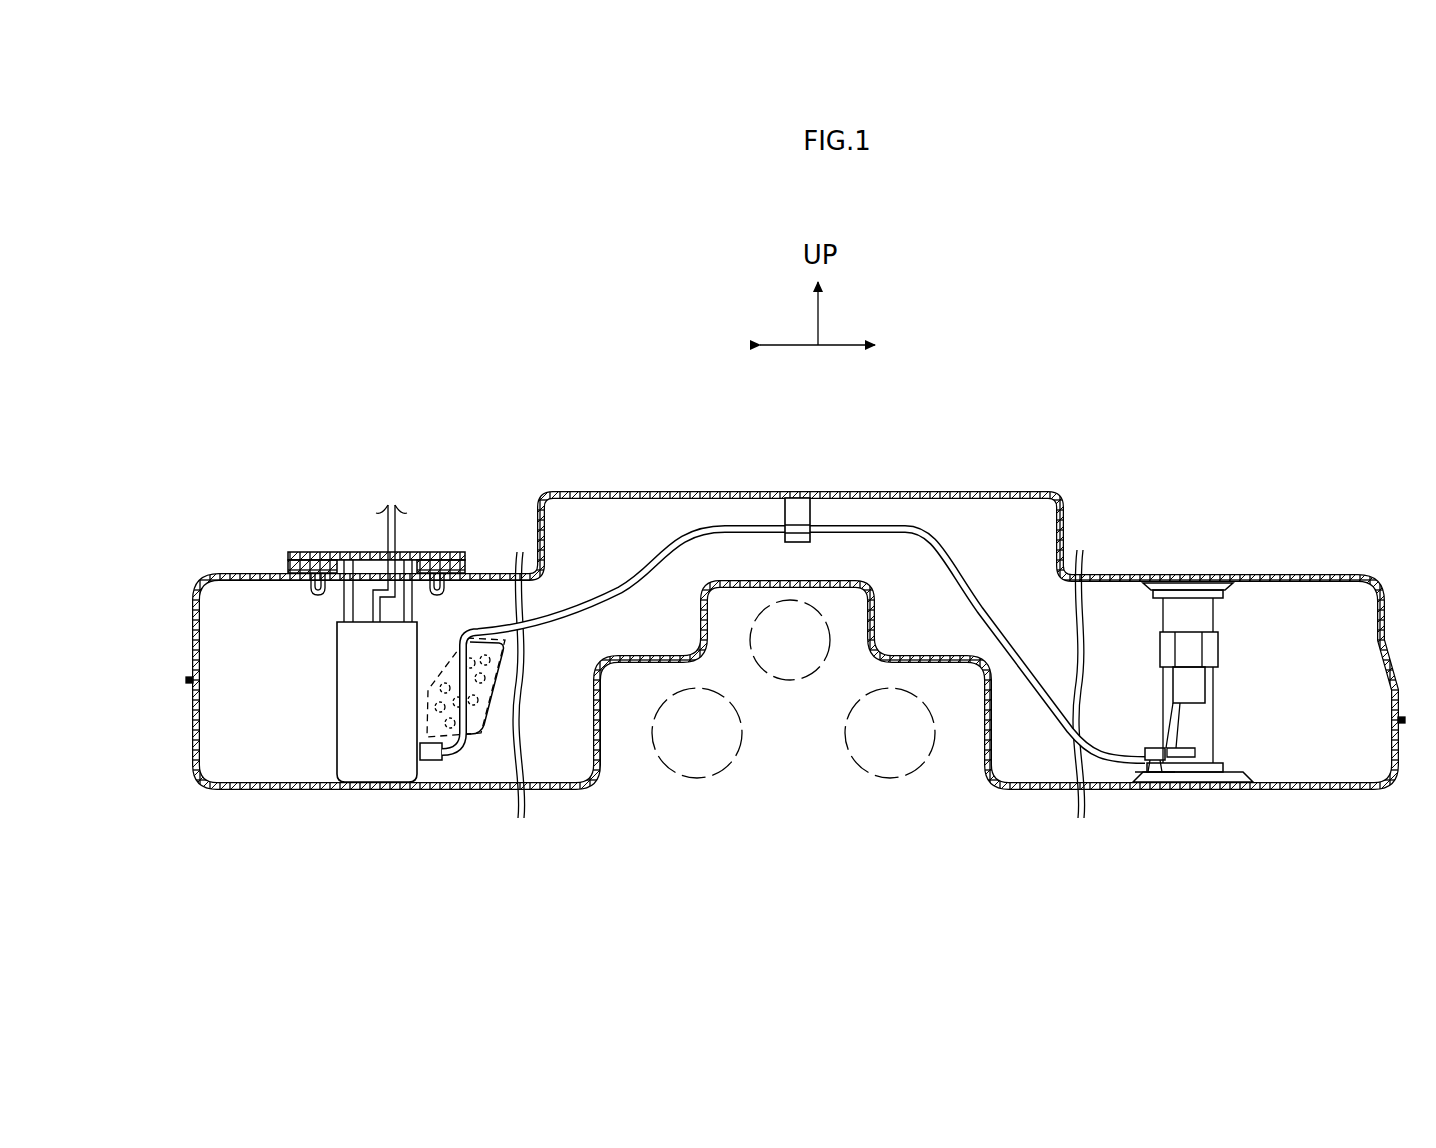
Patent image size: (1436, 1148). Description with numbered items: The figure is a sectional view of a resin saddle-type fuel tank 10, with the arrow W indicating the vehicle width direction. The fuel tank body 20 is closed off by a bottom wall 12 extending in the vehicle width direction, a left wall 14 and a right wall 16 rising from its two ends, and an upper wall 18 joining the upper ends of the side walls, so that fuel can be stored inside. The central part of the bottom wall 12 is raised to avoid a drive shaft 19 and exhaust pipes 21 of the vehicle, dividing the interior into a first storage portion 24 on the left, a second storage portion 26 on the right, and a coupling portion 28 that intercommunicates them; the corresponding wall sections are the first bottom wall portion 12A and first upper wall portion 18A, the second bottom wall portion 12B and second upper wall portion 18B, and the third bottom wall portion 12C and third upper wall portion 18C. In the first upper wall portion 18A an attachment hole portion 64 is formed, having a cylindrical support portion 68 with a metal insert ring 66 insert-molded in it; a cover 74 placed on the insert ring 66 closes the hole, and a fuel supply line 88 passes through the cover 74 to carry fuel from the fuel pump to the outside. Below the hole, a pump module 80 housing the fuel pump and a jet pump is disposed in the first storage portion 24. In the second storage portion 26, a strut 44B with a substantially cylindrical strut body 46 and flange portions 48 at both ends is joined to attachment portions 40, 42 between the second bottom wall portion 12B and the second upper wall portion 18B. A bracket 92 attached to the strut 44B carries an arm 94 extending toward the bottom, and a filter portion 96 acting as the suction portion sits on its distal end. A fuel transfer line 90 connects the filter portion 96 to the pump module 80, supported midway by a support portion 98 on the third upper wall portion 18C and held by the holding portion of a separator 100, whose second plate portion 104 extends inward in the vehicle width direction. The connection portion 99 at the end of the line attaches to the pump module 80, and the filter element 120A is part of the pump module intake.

The fuel tank 10 is at (954, 336).
The bottom wall 12 is at (252, 792).
The first bottom wall portion 12A is at (553, 792).
The second bottom wall portion 12B is at (1340, 792).
The third bottom wall portion 12C is at (958, 668).
The left wall 14 is at (191, 622).
The right wall 16 is at (1380, 645).
The upper wall 18 is at (718, 492).
The first upper wall portion 18A is at (512, 560).
The second upper wall portion 18B is at (1105, 575).
The third upper wall portion 18C is at (658, 492).
The drive shaft 19 is at (795, 682).
The fuel tank body 20 is at (990, 487).
The exhaust pipes 21 is at (663, 780).
The first storage portion 24 is at (221, 568).
The second storage portion 26 is at (1288, 568).
The coupling portion 28 is at (607, 487).
The attachment portion 40 is at (1195, 776).
The attachment portion 42 is at (1183, 588).
The strut 44B is at (1220, 690).
The strut body 46 is at (1205, 728).
The flange portions 48 is at (1223, 595).
The attachment hole portion 64 is at (352, 555).
The insert ring 66 is at (291, 566).
The support portion 68 is at (318, 594).
The cover 74 is at (420, 558).
The pump module 80 is at (352, 720).
The fuel supply line 88 is at (387, 530).
The fuel transfer line 90 is at (900, 520).
The bracket 92 is at (1160, 648).
The arm 94 is at (1170, 728).
The filter portion 96 is at (1133, 778).
The support portion 98 is at (778, 510).
The connection portion 99 is at (432, 792).
The separator 100 is at (489, 725).
The second plate portion 104 is at (493, 697).
The filter element 120A is at (463, 648).
The arrow W is at (848, 348).